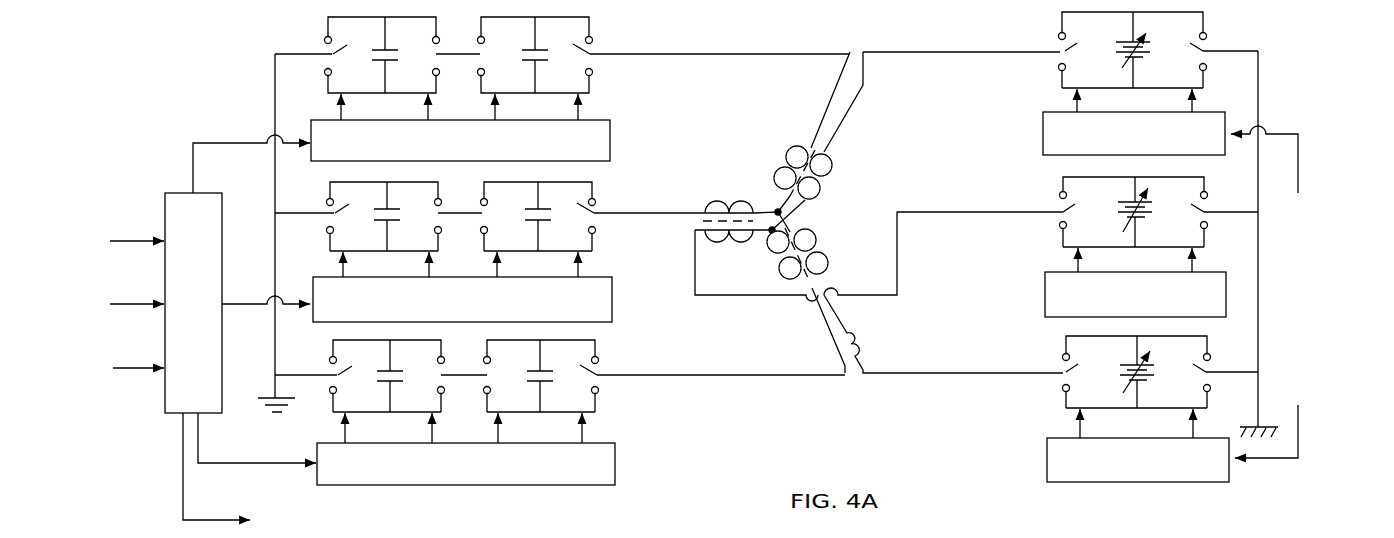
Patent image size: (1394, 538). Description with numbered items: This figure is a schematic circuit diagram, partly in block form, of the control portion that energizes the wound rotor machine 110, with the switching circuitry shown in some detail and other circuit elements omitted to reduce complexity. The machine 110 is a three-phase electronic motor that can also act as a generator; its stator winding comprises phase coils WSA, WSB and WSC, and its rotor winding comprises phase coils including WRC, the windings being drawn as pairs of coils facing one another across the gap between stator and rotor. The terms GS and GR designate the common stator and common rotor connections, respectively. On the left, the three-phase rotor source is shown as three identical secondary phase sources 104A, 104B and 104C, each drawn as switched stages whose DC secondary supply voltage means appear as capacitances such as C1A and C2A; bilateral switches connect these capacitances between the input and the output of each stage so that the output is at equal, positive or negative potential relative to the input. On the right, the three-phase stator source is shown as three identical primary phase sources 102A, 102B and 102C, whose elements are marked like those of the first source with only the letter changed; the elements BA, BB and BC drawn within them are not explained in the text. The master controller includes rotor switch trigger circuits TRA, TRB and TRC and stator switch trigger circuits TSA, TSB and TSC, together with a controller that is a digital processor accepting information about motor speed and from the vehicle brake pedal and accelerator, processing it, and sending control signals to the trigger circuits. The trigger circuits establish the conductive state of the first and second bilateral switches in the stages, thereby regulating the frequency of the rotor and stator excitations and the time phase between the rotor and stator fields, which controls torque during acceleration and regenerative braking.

The secondary phase source 104A is at (562, 55).
The secondary phase source 104B is at (490, 216).
The secondary phase source 104C is at (560, 375).
The primary phase source 102A is at (1060, 53).
The primary phase source 102B is at (1118, 213).
The primary phase source 102C is at (1119, 365).
The wound rotor machine 110 is at (847, 212).
The capacitance C1A is at (389, 59).
The capacitance C2A is at (540, 59).
The rotor switch trigger circuits TRA is at (612, 141).
The rotor switch trigger circuits TRB is at (614, 309).
The rotor switch trigger circuits TRC is at (618, 462).
The stator switch trigger circuits TSA is at (1043, 136).
The stator switch trigger circuits TSB is at (1045, 295).
The stator switch trigger circuits TSC is at (1070, 484).
The battery BA is at (1120, 50).
The battery BB is at (1119, 212).
The battery BC is at (1120, 372).
The common rotor connection GR is at (283, 413).
The common stator connection GS is at (1248, 426).
The stator phase coil WSA is at (832, 163).
The rotor phase coil WRC is at (705, 200).
The stator phase coil WSC is at (707, 243).
The stator phase coil WSB is at (767, 258).